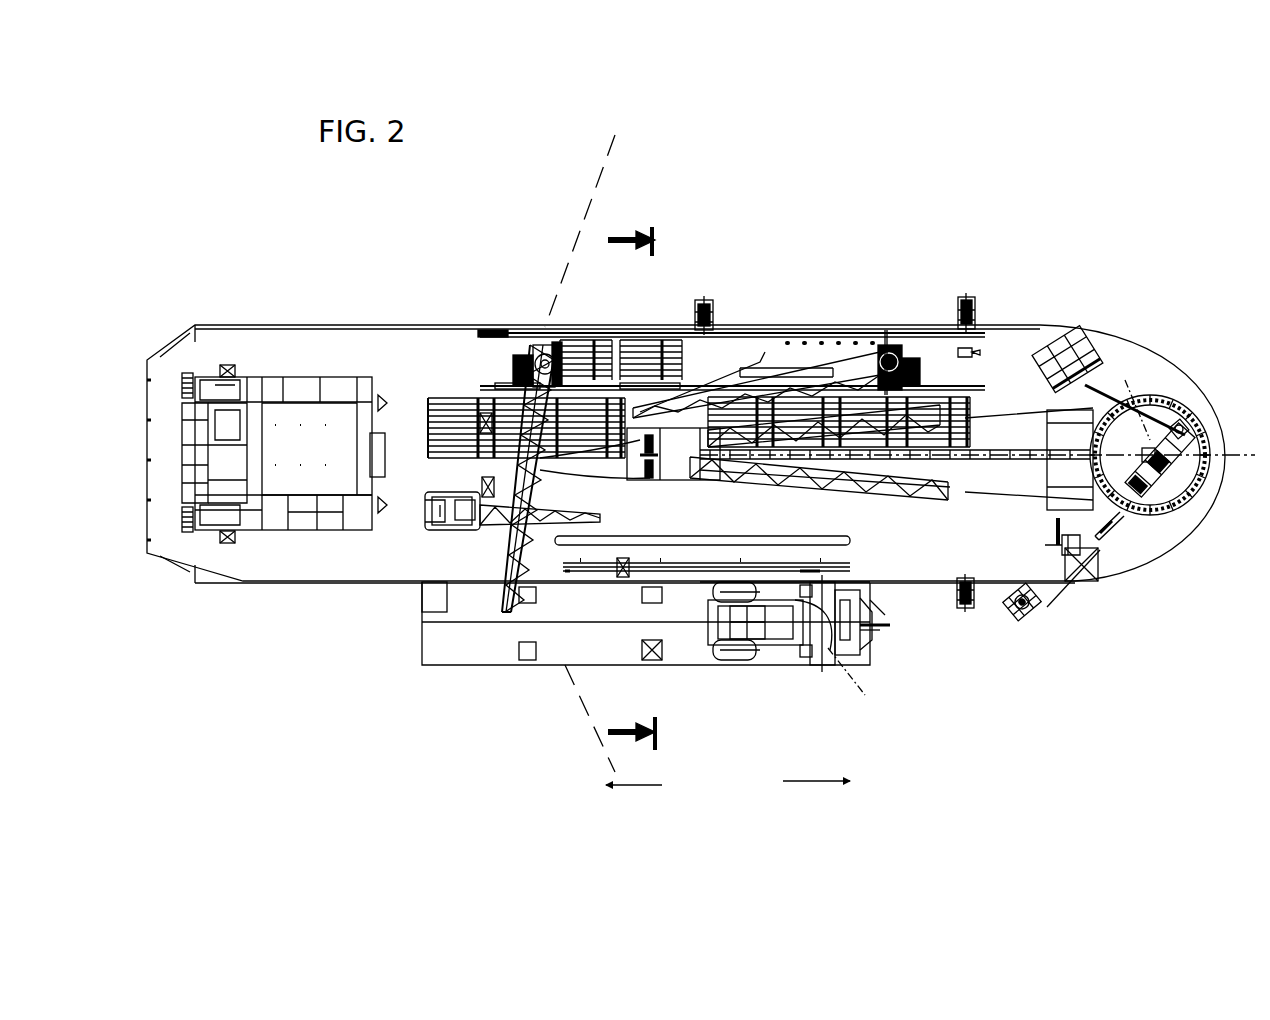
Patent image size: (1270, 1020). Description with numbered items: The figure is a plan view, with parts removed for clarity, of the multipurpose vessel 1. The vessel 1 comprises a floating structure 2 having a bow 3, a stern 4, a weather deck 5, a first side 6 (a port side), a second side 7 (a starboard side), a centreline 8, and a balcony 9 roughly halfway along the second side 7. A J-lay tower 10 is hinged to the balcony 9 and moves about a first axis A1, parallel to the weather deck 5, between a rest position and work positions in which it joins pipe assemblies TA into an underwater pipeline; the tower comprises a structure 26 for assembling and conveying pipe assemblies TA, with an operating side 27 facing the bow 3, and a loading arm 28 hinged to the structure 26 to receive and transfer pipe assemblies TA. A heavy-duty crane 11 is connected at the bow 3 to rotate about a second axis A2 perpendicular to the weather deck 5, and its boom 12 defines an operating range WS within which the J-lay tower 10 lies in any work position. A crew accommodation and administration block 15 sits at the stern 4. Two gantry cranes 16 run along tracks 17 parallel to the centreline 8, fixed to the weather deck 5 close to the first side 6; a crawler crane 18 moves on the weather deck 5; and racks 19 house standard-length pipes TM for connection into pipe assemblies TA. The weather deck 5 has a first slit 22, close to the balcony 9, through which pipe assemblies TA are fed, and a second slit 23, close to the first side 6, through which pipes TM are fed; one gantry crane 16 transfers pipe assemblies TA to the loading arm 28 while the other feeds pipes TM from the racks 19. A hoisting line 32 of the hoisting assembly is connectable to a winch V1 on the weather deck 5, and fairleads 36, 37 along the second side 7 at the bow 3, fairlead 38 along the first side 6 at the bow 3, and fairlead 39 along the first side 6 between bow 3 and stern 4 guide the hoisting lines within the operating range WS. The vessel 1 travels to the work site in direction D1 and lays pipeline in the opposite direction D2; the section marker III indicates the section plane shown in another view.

The vessel 1 is at (290, 248).
The floating structure 2 is at (1112, 555).
The bow 3 is at (1205, 387).
The stern 4 is at (205, 605).
The weather deck 5 is at (975, 540).
The first side 6 is at (795, 325).
The second side 7 is at (889, 583).
The centreline 8 is at (1236, 470).
The balcony 9 is at (683, 665).
The J-lay tower 10 is at (805, 668).
The heavy-duty crane 11 is at (862, 500).
The boom 12 is at (790, 485).
The crew accommodation and administration block 15 is at (252, 355).
The gantry cranes 16 is at (520, 330).
The tracks 17 is at (735, 332).
The crawler crane 18 is at (528, 493).
The racks 19 is at (448, 380).
The first slit 22 is at (848, 543).
The second slit 23 is at (760, 332).
The structure 26 is at (838, 652).
The operating side 27 is at (895, 640).
The loading arm 28 is at (688, 578).
The hoisting line 32 is at (1135, 543).
The fairlead 36 is at (957, 600).
The fairlead 37 is at (1022, 620).
The fairlead 38 is at (975, 312).
The fairlead 39 is at (705, 296).
The pipes TM is at (425, 440).
The pipe assemblies TA is at (690, 585).
The operating range WS is at (560, 225).
The winch V1 is at (1077, 352).
The first axis A1 is at (846, 686).
The second axis A2 is at (1132, 400).
The direction D1 is at (800, 787).
The direction D2 is at (618, 790).
The section line III is at (631, 490).